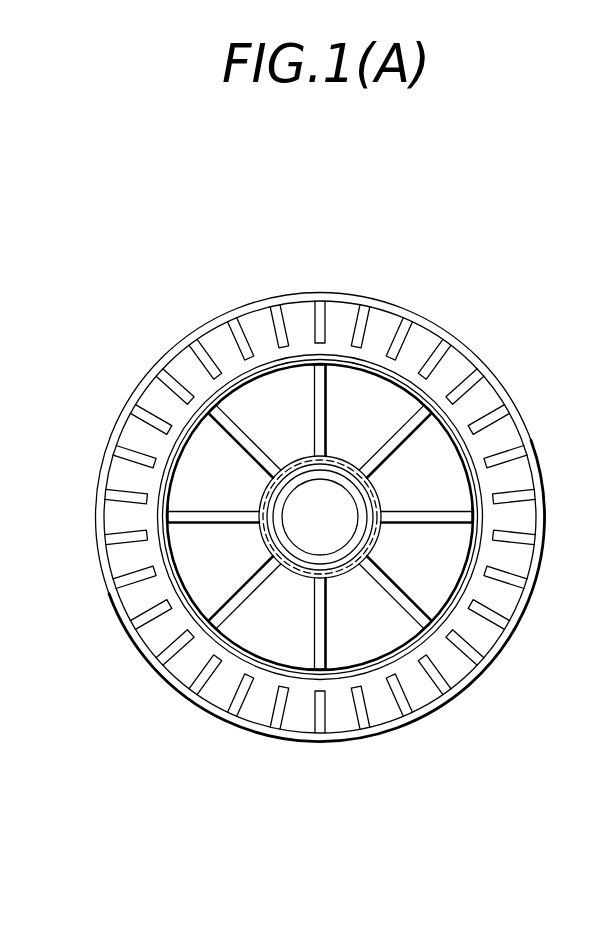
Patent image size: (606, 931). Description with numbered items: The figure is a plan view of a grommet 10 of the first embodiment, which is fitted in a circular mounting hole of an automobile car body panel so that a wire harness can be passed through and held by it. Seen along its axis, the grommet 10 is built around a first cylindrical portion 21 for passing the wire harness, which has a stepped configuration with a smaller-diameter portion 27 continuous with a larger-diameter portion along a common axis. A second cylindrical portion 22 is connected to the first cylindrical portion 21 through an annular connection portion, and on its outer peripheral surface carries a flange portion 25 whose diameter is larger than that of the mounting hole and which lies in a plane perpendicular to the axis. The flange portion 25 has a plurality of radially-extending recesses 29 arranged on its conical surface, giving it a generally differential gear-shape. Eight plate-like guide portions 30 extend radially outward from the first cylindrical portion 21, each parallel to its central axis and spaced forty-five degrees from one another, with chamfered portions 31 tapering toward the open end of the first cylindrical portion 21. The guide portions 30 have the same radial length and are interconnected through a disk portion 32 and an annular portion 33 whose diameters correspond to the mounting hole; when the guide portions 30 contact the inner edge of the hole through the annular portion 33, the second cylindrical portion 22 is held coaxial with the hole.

The grommet 10 is at (470, 258).
The first cylindrical portion 21 is at (360, 553).
The second cylindrical portion 22 is at (285, 310).
The flange portion 25 is at (390, 731).
The smaller-diameter portion 27 is at (226, 557).
The radially-extending recesses 29 is at (197, 333).
The guide portions 30 is at (324, 423).
The chamfered portions 31 is at (318, 360).
The disk portion 32 is at (453, 490).
The annular portion 33 is at (505, 640).